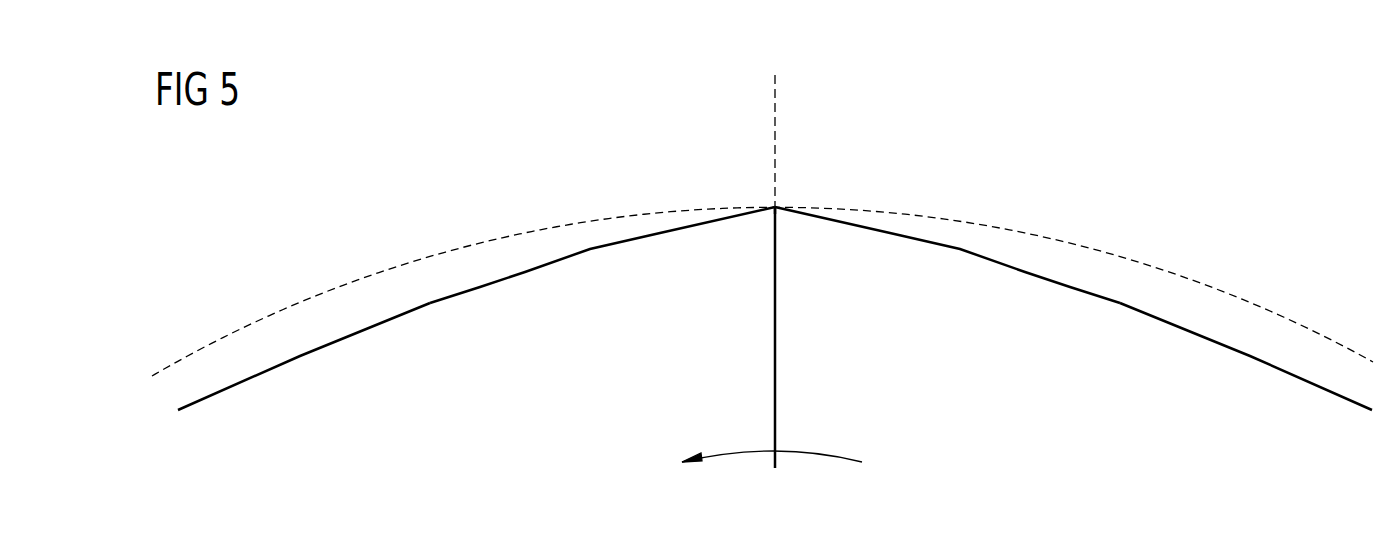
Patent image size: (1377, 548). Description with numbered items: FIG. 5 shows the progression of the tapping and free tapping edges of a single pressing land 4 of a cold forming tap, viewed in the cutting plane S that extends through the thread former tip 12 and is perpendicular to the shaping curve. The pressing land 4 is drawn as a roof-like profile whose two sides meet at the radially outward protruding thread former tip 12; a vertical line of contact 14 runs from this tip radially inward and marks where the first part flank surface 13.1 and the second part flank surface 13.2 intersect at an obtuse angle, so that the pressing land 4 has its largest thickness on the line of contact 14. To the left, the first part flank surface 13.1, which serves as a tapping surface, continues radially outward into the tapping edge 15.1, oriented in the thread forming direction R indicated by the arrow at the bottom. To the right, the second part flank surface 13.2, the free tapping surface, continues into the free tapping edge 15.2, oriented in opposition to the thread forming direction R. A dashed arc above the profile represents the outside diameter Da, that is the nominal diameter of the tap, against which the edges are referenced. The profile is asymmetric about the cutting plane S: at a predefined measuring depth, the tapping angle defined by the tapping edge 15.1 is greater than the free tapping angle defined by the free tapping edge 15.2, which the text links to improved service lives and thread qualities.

The pressing land 4 is at (775, 259).
The thread former tip 12 is at (777, 205).
The first part flank surface 13.1 is at (522, 297).
The second part flank surface 13.2 is at (1043, 297).
The tapping edge 15.1 is at (352, 332).
The free tapping edge 15.2 is at (1258, 355).
The line of contact 14 is at (776, 343).
The cutting plane S is at (773, 97).
The outside diameter Da is at (923, 211).
The thread forming direction R is at (718, 454).